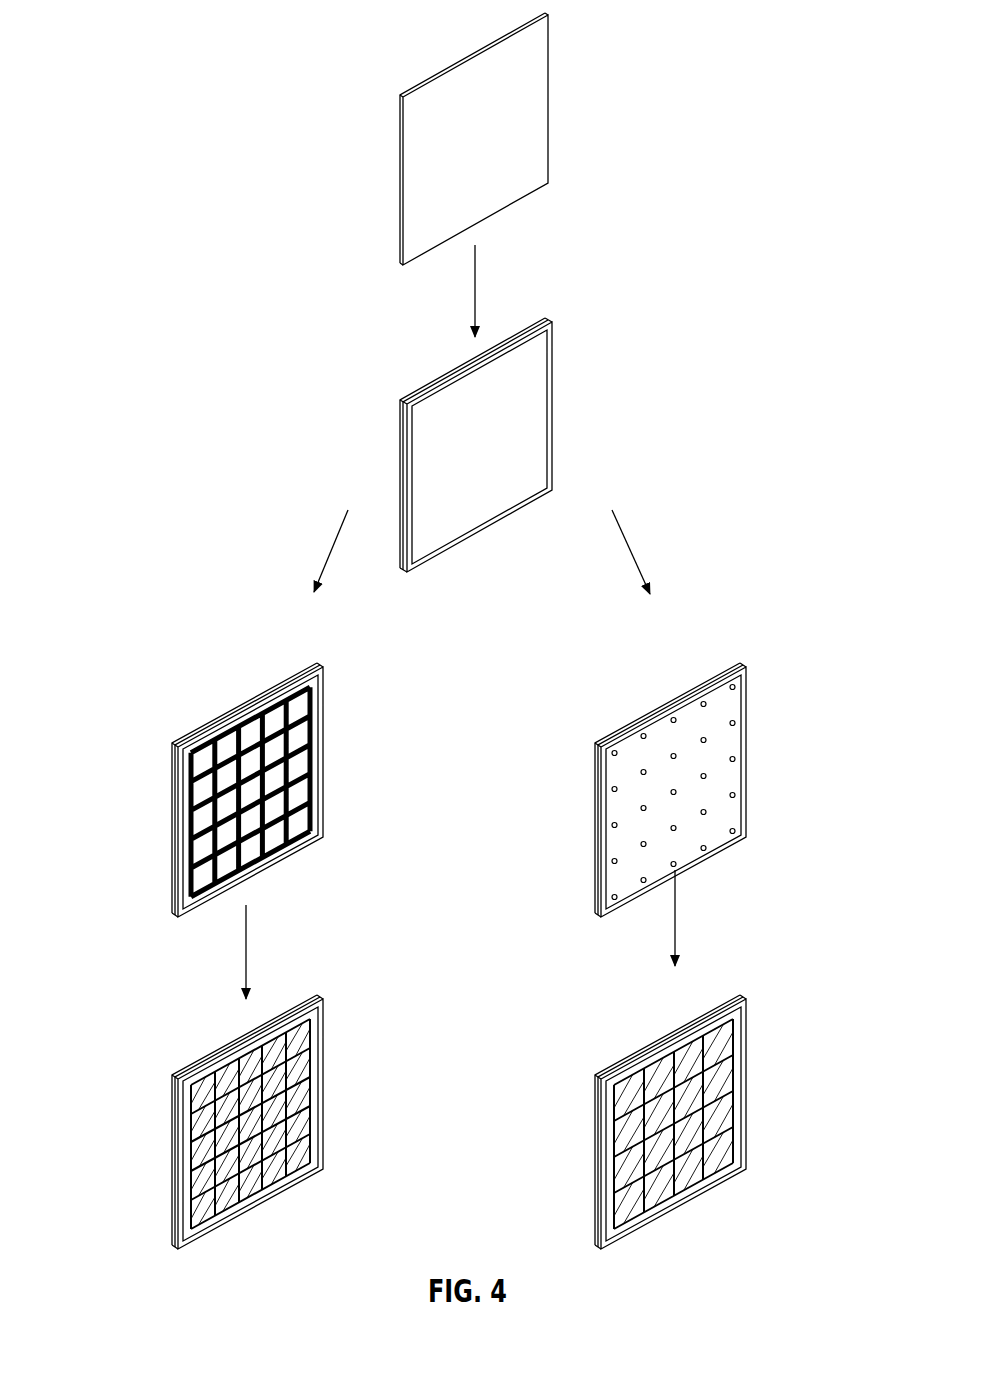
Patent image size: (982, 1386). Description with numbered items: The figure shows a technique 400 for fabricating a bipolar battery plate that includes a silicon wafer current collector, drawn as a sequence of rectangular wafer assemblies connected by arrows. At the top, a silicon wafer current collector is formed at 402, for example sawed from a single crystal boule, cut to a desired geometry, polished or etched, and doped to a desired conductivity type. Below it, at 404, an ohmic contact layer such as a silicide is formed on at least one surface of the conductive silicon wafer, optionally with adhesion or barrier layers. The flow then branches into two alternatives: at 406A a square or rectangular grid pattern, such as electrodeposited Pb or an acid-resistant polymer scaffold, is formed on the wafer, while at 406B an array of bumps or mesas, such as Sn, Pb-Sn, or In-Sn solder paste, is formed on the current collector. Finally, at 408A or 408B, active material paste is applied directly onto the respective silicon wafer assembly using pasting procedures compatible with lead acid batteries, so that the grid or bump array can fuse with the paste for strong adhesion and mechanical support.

The technique 400 is at (320, 32).
The silicon wafer current collector forming step 402 is at (401, 197).
The ohmic contact layer forming step 404 is at (401, 480).
The grid pattern forming step 406A is at (172, 830).
The bump array forming step 406B is at (750, 741).
The active material pasting step 408A is at (171, 1160).
The active material pasting step 408B is at (749, 1056).